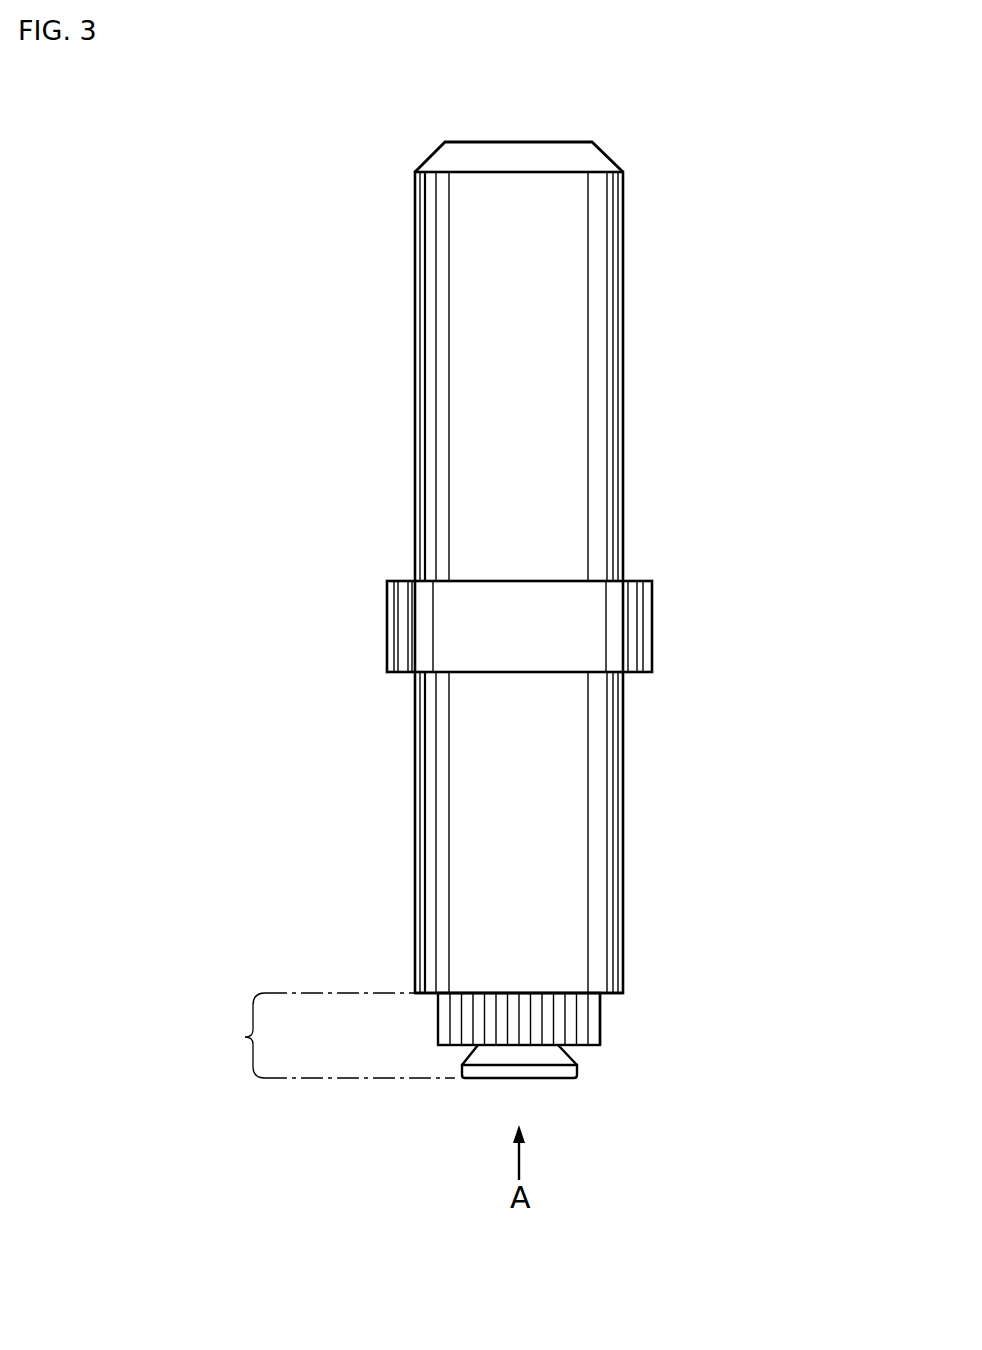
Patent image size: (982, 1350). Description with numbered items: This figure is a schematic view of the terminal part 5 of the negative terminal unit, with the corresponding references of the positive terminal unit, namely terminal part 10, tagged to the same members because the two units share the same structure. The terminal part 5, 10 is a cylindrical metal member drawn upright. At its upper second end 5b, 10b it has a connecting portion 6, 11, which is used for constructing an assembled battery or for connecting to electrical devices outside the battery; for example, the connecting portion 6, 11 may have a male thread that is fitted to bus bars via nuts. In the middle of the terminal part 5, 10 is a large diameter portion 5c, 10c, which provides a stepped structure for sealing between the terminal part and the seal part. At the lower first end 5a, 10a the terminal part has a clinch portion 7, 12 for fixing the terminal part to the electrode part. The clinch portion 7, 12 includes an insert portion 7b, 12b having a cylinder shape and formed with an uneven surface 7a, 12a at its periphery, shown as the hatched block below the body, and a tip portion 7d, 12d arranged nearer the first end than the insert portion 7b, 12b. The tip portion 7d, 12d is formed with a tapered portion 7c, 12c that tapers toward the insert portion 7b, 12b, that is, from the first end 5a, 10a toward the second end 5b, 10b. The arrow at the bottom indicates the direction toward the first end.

The terminal part 5 is at (537, 628).
The terminal part 10 is at (537, 628).
The first end 5a is at (509, 1083).
The first end 10a is at (470, 1100).
The second end 5b is at (585, 127).
The second end 10b is at (622, 142).
The large diameter portion 5c is at (447, 626).
The large diameter portion 10c is at (385, 625).
The connecting portion 6 is at (460, 582).
The connecting portion 11 is at (405, 348).
The clinch portion 7 is at (455, 1050).
The clinch portion 12 is at (455, 1050).
The uneven surface 7a is at (445, 1019).
The uneven surface 12a is at (438, 1015).
The insert portion 7b is at (676, 1019).
The insert portion 12b is at (612, 1020).
The tapered portion 7c is at (587, 1076).
The tapered portion 12c is at (560, 1053).
The tip portion 7d is at (442, 1061).
The tip portion 12d is at (450, 1062).